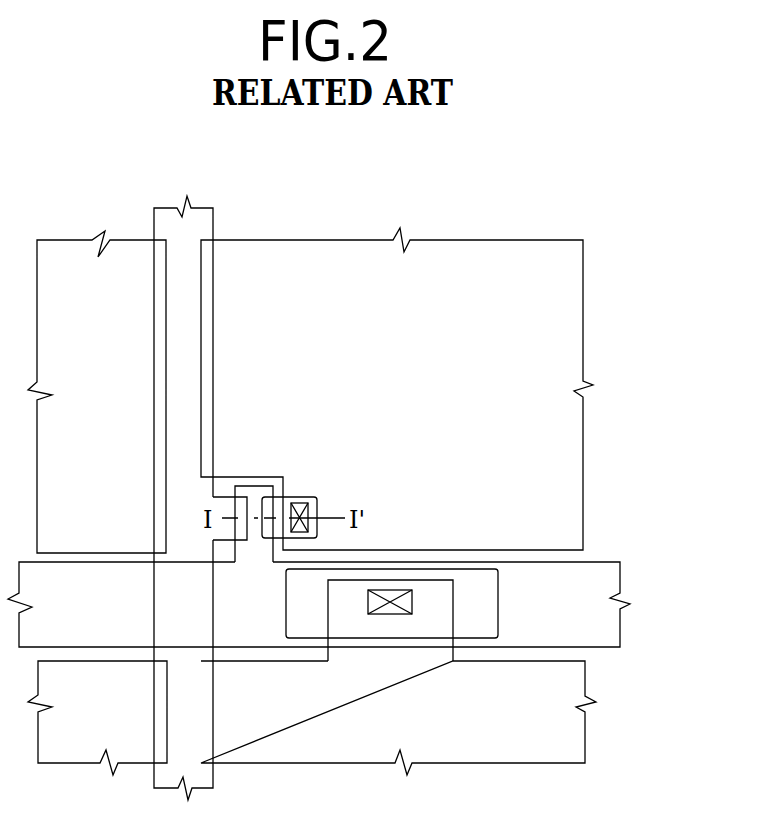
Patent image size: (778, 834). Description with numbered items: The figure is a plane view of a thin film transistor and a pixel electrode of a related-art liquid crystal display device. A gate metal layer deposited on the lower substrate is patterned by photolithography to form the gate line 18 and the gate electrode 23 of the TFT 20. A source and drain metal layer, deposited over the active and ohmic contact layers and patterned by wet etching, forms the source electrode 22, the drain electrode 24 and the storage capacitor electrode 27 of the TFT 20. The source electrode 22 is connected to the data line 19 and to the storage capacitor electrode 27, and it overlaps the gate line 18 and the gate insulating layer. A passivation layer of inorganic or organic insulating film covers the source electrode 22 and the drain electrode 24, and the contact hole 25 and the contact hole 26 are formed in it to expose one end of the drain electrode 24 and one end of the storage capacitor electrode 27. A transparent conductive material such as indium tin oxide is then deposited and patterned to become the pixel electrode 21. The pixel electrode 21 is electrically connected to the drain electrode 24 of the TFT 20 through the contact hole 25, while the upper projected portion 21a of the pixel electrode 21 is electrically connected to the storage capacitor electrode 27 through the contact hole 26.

The gate line 18 is at (622, 590).
The data line 19 is at (152, 223).
The thin film transistor 20 is at (289, 466).
The pixel electrode 21 is at (560, 327).
The upper projected portion of the pixel electrode 21a is at (454, 650).
The source electrode 22 is at (228, 498).
The gate electrode 23 is at (258, 494).
The drain electrode 24 is at (305, 497).
The contact hole 25 is at (316, 506).
The contact hole 26 is at (392, 614).
The storage capacitor electrode 27 is at (467, 573).